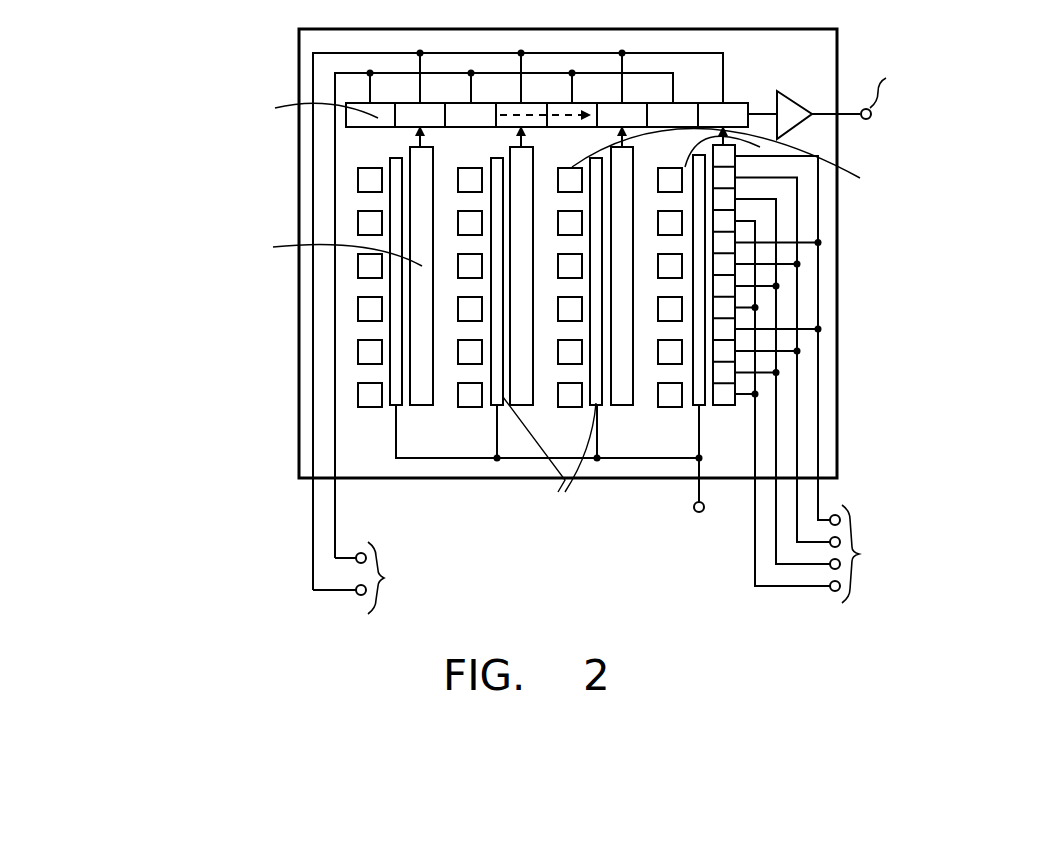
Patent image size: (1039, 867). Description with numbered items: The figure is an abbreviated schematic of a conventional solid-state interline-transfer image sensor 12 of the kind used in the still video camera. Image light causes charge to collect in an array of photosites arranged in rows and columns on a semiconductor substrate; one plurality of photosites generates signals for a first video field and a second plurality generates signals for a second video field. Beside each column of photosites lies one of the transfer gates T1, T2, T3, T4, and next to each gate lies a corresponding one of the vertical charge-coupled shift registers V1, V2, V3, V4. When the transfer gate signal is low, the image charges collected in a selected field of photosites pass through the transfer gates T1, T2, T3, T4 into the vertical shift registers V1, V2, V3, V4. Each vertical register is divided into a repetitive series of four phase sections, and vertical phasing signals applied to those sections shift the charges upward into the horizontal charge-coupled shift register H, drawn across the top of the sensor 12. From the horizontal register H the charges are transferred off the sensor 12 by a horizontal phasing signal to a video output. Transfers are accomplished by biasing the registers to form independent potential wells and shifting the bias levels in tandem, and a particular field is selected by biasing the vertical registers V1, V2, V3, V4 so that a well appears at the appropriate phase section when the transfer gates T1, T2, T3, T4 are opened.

The image sensor 12 is at (576, 321).
The horizontal CCD shift register H is at (727, 102).
The vertical CCD shift register V1 is at (760, 144).
The vertical CCD shift register V2 is at (638, 180).
The vertical CCD shift register V3 is at (537, 157).
The vertical CCD shift register V4 is at (446, 147).
The transfer gate T1 is at (697, 160).
The transfer gate T2 is at (596, 157).
The transfer gate T3 is at (497, 157).
The transfer gate T4 is at (396, 157).